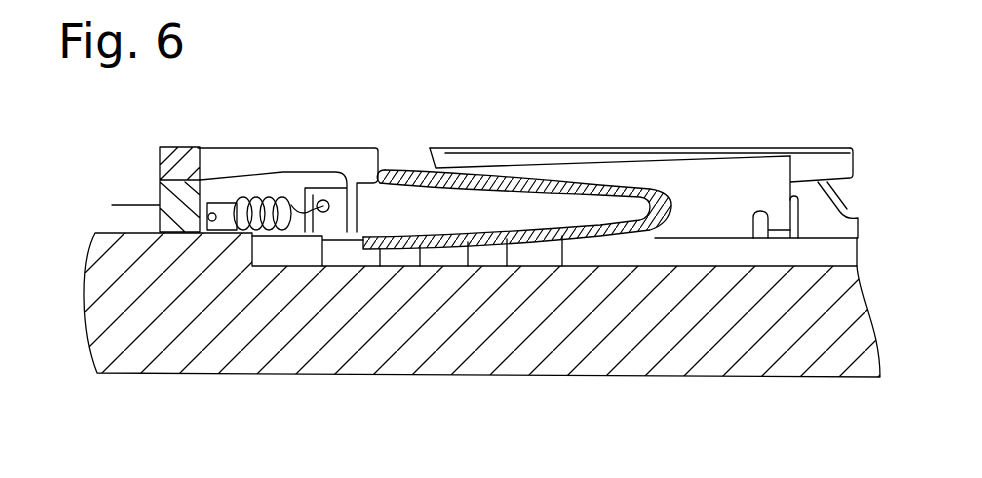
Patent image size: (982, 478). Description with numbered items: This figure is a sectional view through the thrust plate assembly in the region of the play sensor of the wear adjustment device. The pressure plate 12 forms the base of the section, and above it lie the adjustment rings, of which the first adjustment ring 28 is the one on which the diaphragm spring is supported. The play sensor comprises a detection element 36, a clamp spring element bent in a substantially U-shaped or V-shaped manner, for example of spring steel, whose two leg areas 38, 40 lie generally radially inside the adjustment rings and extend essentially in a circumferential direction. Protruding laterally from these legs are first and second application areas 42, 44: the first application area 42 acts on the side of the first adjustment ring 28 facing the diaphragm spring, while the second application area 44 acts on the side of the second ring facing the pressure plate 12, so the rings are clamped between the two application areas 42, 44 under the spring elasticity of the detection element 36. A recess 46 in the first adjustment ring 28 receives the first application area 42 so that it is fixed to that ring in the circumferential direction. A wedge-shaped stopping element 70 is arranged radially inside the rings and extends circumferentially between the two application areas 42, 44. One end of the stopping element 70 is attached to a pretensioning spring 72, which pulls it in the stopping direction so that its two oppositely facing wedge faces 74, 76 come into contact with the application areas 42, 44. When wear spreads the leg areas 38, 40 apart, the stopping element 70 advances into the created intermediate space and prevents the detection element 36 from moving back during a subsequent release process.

The pressure plate 12 is at (184, 356).
The first adjustment ring 28 is at (640, 152).
The detection element 36 is at (531, 174).
The leg area 38 is at (473, 175).
The leg area 40 is at (473, 250).
The first application area 42 is at (397, 168).
The second application area 44 is at (383, 248).
The recess 46 is at (380, 147).
The stopping element 70 is at (730, 180).
The pretensioning spring 72 is at (258, 190).
The wedge face 74 is at (612, 150).
The wedge face 76 is at (688, 238).